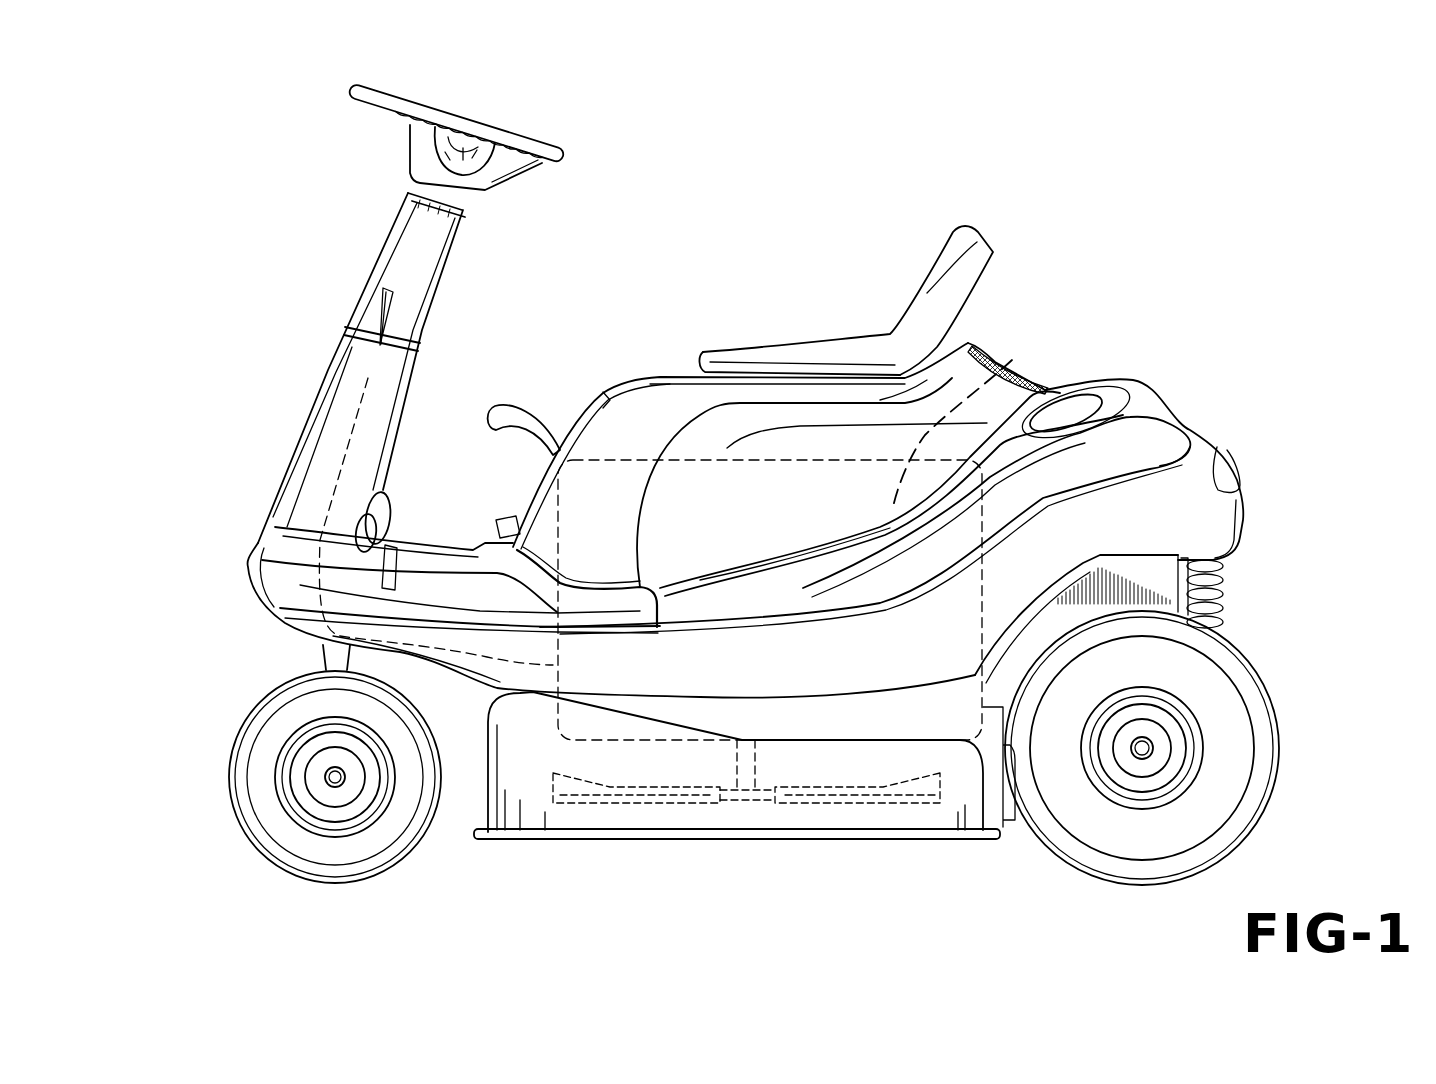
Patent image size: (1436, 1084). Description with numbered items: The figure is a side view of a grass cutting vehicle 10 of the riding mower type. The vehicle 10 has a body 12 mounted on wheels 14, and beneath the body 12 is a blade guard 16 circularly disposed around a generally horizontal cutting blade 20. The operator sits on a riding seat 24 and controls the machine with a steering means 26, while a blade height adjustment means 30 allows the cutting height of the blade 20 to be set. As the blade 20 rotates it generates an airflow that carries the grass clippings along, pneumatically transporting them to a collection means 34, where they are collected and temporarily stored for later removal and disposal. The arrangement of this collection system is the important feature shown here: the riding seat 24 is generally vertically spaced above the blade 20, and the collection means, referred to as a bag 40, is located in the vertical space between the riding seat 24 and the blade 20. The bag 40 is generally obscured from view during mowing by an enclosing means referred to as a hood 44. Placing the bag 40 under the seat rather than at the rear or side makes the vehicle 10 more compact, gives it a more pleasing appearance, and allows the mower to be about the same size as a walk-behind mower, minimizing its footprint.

The grass cutting vehicle 10 is at (188, 208).
The body 12 is at (280, 597).
The wheels 14 is at (260, 730).
The blade guard 16 is at (601, 822).
The cutting blade 20 is at (787, 800).
The riding seat 24 is at (745, 352).
The steering means 26 is at (505, 140).
The blade height adjustment means 30 is at (505, 412).
The collection means 34 is at (1012, 358).
The bag 40 is at (627, 458).
The hood 44 is at (1120, 402).